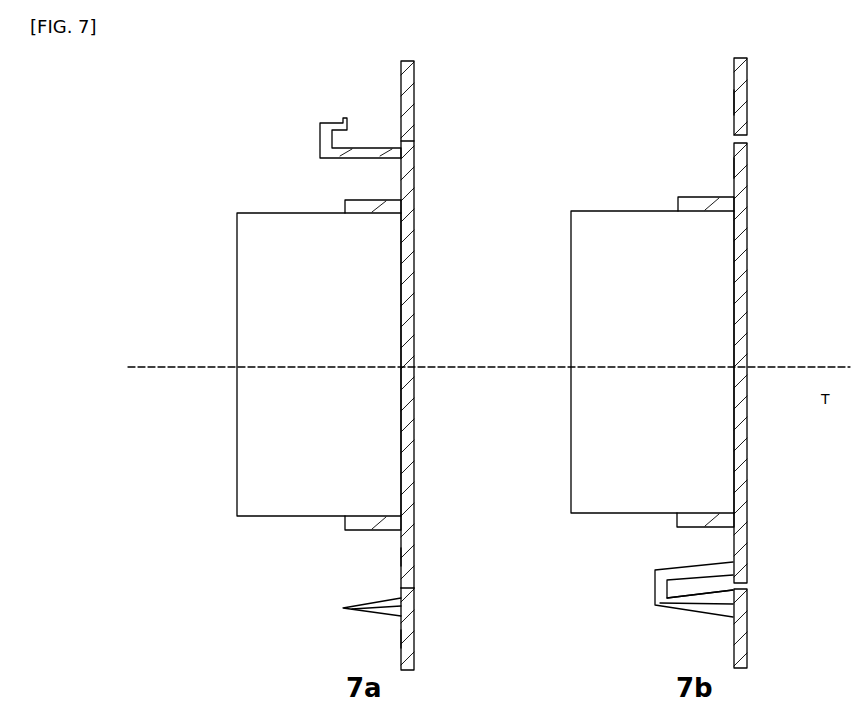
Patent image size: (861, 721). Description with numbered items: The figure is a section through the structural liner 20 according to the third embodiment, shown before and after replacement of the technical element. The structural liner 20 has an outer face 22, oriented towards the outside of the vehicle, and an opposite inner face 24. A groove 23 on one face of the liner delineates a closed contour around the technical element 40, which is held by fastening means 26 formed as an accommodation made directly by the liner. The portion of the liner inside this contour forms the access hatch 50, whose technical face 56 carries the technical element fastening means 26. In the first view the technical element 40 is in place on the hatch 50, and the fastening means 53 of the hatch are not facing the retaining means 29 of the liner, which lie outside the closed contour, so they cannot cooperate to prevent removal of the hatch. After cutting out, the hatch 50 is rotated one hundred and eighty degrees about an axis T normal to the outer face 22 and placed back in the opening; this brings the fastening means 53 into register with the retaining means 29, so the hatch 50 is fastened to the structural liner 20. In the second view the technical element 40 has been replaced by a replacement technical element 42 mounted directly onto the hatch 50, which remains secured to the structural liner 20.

The structural liner 20 is at (401, 94).
The outer face 22 is at (399, 637).
The groove 23 is at (414, 141).
The inner face 24 is at (414, 621).
The fastening means 26 is at (362, 200).
The retaining means 29 is at (343, 606).
The technical element 40 is at (300, 285).
The replacement technical element 42 is at (659, 287).
The access hatch 50 is at (414, 300).
The fastening means of the replacement hatch 53 is at (322, 126).
The technical face 56 is at (399, 557).